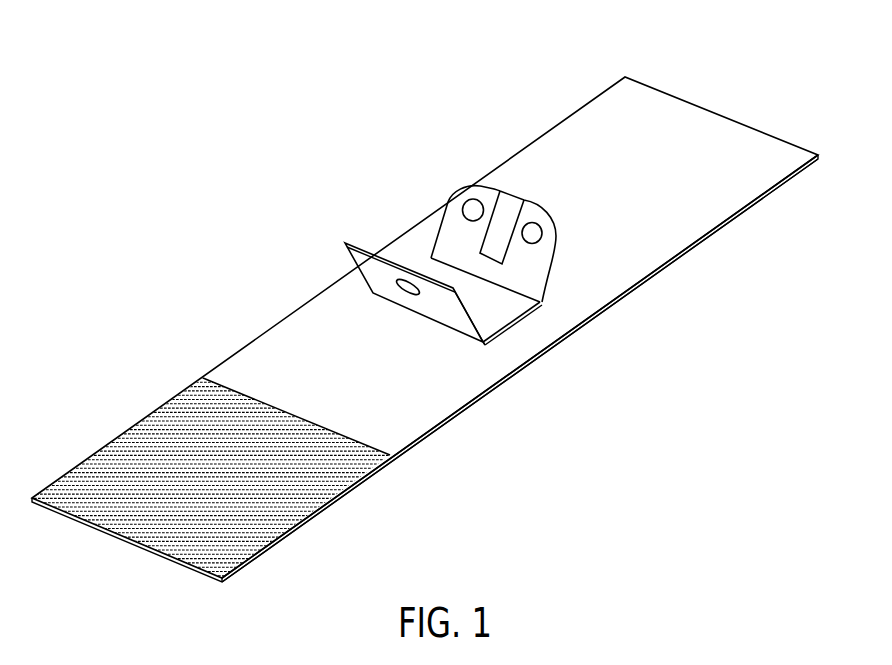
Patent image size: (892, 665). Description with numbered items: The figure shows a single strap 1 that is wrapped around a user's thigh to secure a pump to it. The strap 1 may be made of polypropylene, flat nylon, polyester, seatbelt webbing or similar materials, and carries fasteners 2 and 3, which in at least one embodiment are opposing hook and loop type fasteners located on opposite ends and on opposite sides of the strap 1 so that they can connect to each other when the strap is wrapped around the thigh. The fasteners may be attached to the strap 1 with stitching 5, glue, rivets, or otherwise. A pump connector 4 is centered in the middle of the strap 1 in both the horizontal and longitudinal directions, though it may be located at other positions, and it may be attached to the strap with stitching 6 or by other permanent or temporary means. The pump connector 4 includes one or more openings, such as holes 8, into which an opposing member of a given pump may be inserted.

The strap 1 is at (572, 147).
The fastener 2 is at (185, 432).
The fastener 3 is at (744, 245).
The pump connector 4 is at (505, 310).
The stitching 5 is at (382, 428).
The stitching 6 is at (443, 258).
The holes 8 is at (523, 227).